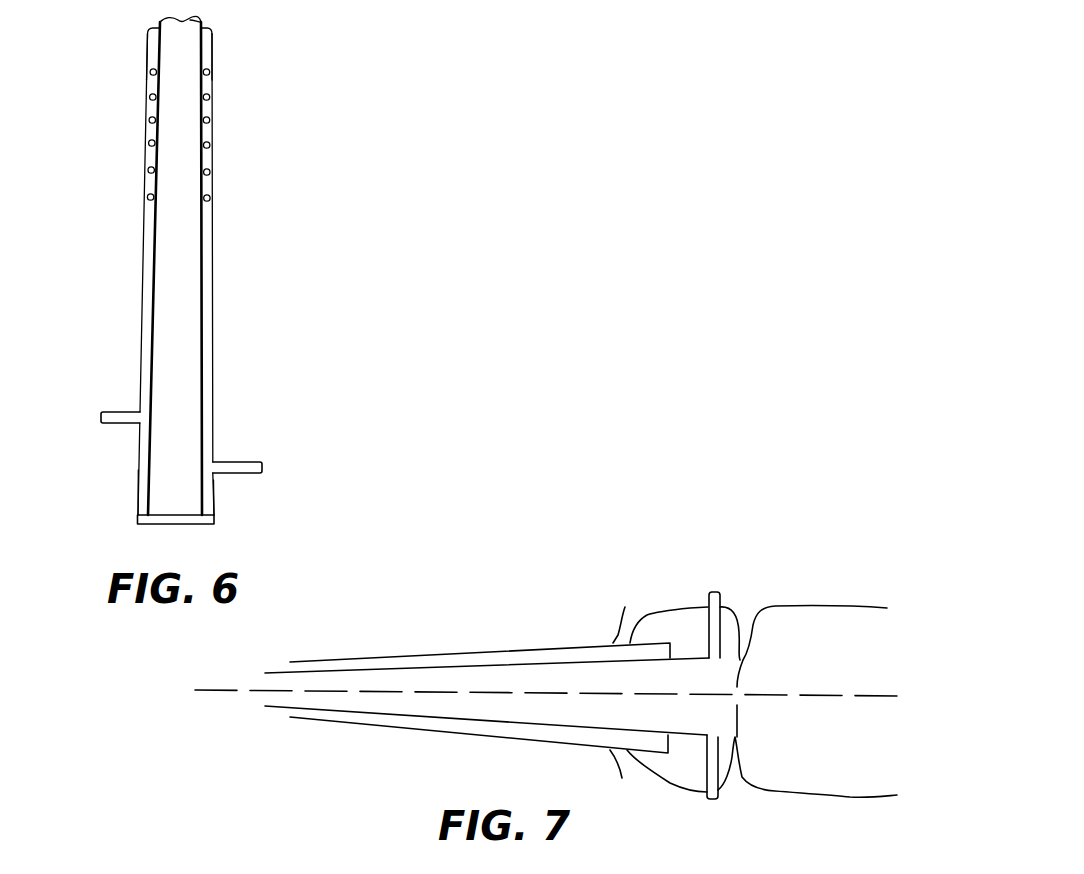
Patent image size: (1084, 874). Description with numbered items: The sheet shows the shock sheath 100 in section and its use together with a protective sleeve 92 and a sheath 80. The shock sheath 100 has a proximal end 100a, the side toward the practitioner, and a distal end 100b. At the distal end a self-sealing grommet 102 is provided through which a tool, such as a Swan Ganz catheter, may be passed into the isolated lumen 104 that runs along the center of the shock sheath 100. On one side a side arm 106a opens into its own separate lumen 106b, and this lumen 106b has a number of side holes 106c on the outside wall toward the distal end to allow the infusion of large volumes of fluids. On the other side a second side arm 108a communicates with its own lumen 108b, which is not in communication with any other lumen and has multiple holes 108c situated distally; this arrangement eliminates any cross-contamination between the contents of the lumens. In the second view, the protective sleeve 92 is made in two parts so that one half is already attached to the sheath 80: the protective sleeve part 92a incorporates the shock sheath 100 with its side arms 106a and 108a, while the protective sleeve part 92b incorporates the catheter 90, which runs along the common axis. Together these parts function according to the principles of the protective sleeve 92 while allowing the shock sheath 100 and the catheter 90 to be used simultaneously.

In FIG. 7, the sheath 80 is at (405, 730).
In FIG. 7, the catheter 90 is at (228, 691).
In FIG. 7, the protective sleeve 92 is at (833, 603).
In FIG. 7, the protective sleeve part 92a is at (651, 774).
In FIG. 7, the protective sleeve part 92b is at (845, 797).
In FIG. 6, the shock sheath 100 is at (220, 300).
In FIG. 7, the shock sheath 100 is at (316, 710).
In FIG. 6, the proximal end 100a is at (143, 37).
In FIG. 6, the distal end 100b is at (130, 506).
In FIG. 6, the self-sealing grommet 102 is at (162, 521).
In FIG. 6, the isolated lumen 104 is at (170, 287).
In FIG. 6, the side arm 106a is at (118, 412).
In FIG. 7, the side arm 106a is at (712, 799).
In FIG. 6, the lumen 106b is at (148, 108).
In FIG. 6, the side holes 106c is at (148, 143).
In FIG. 6, the side arm 108a is at (250, 462).
In FIG. 7, the side arm 108a is at (713, 592).
In FIG. 6, the lumen 108b is at (212, 192).
In FIG. 6, the holes 108c is at (212, 118).